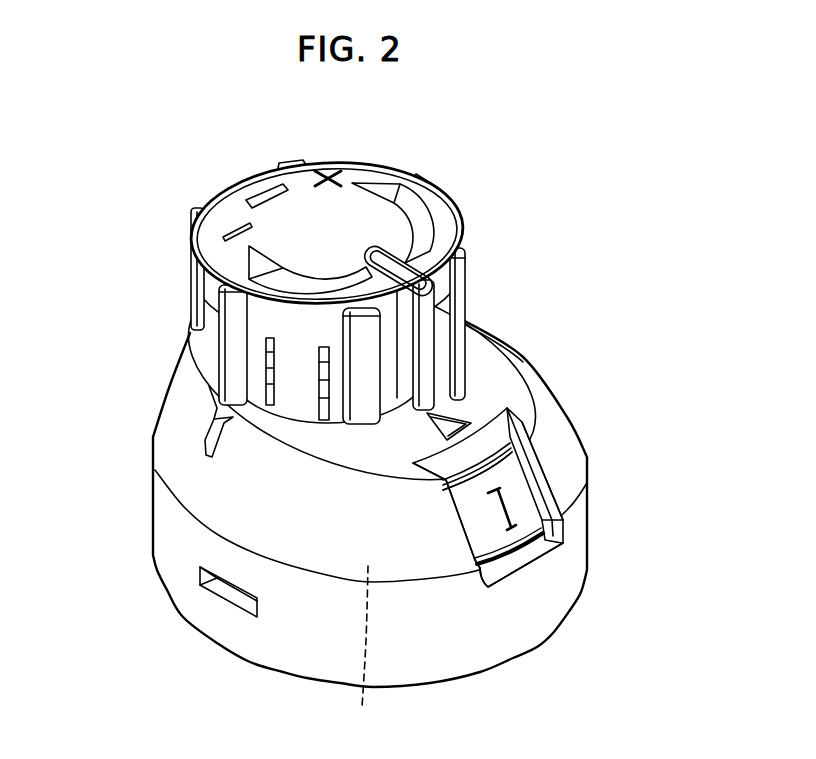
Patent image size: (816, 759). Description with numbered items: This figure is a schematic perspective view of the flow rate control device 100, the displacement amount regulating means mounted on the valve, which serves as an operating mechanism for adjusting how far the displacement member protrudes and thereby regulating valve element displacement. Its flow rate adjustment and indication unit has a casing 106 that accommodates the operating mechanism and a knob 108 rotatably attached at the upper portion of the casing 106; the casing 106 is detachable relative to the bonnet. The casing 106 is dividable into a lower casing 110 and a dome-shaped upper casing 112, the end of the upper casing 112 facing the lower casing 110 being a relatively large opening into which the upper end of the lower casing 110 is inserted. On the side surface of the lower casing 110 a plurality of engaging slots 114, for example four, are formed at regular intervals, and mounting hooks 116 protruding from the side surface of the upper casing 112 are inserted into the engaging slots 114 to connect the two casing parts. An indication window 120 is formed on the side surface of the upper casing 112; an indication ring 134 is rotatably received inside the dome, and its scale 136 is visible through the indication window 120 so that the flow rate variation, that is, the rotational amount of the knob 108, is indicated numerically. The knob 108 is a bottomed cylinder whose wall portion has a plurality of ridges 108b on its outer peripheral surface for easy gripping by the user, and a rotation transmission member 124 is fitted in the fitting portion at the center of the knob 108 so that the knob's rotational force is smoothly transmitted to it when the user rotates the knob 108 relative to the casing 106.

The flow rate control device 100 is at (173, 114).
The casing 106 is at (82, 430).
The knob 108 is at (363, 274).
The ridges 108b is at (464, 277).
The lower casing 110 is at (172, 520).
The upper casing 112 is at (175, 442).
The engaging slots 114 is at (203, 578).
The mounting hooks 116 is at (237, 582).
The indication window 120 is at (530, 450).
The rotation transmission member 124 is at (362, 648).
The indication ring 134 is at (522, 496).
The scale 136 is at (575, 519).